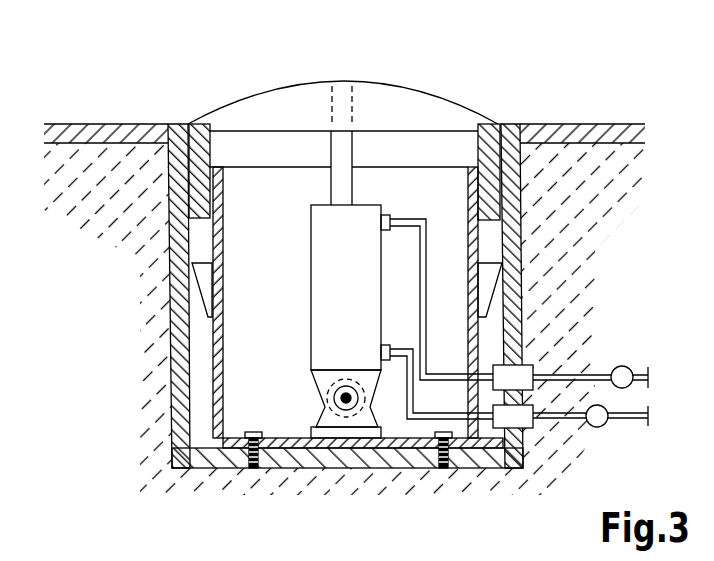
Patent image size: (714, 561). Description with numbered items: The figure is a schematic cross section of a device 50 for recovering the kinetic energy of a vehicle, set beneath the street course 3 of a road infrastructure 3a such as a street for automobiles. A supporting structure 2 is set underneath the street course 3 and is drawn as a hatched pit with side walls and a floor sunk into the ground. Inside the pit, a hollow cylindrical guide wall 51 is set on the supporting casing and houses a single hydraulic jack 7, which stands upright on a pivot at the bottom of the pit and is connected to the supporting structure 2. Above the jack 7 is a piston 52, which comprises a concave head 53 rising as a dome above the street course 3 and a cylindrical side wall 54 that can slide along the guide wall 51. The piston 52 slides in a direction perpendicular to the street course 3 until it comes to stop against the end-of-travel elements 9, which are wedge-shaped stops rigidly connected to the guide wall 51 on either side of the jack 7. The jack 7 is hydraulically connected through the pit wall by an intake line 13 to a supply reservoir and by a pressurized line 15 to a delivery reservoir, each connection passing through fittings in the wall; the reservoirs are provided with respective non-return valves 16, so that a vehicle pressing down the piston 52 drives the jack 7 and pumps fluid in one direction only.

The supporting structure 2 is at (177, 123).
The street course 3 is at (560, 121).
The road infrastructure 3a is at (135, 122).
The hydraulic jack 7 is at (328, 318).
The end-of-travel element 9 is at (203, 282).
The intake line 13 is at (571, 410).
The pressurized line 15 is at (605, 427).
The non-return valve 16 is at (515, 379).
The device 50 is at (120, 284).
The hollow cylindrical guide wall 51 is at (222, 228).
The piston 52 is at (292, 80).
The concave head 53 is at (388, 104).
The cylindrical side wall 54 is at (496, 124).